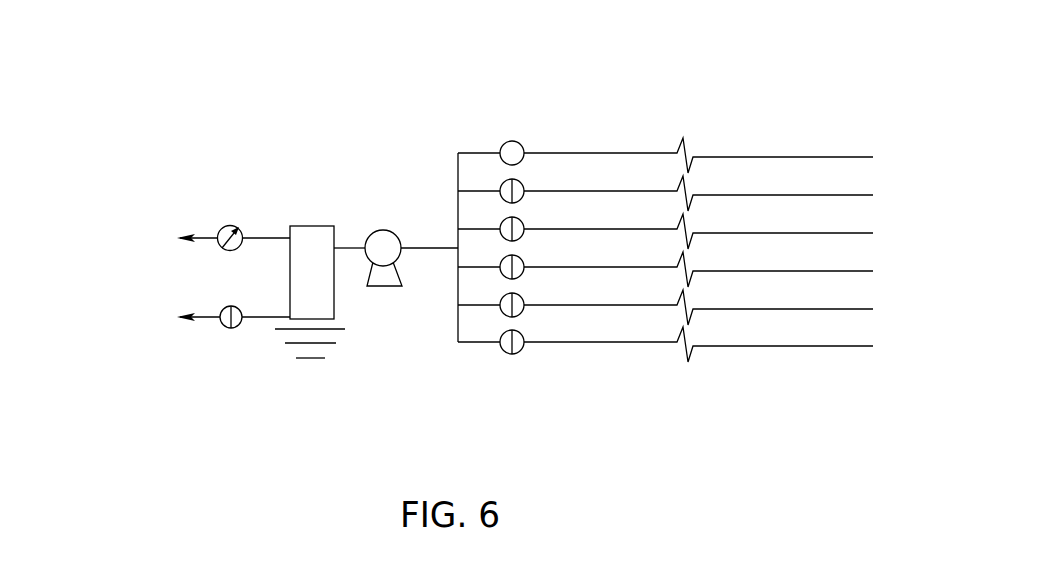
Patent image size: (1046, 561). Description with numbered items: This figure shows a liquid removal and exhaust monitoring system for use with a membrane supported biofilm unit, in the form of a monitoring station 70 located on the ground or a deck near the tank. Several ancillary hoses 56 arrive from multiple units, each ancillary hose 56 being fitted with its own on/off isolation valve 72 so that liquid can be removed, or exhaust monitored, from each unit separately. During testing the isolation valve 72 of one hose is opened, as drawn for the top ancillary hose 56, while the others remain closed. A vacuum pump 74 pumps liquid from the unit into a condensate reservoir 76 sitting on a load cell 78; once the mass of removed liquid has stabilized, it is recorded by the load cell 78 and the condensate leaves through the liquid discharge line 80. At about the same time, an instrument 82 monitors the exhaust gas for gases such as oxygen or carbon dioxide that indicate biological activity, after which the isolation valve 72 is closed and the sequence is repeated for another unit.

The monitoring station 70 is at (236, 98).
The isolation valve 72 is at (514, 140).
The vacuum pump 74 is at (395, 149).
The liquid reservoir 76 is at (336, 318).
The load cell 78 is at (278, 345).
The liquid discharge line 80 is at (262, 312).
The instrument 82 is at (221, 229).
The ancillary hose 56 is at (850, 157).